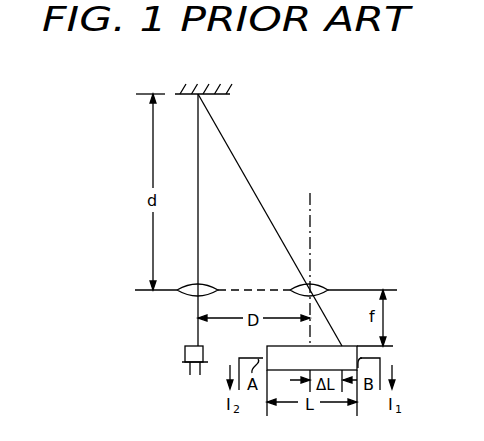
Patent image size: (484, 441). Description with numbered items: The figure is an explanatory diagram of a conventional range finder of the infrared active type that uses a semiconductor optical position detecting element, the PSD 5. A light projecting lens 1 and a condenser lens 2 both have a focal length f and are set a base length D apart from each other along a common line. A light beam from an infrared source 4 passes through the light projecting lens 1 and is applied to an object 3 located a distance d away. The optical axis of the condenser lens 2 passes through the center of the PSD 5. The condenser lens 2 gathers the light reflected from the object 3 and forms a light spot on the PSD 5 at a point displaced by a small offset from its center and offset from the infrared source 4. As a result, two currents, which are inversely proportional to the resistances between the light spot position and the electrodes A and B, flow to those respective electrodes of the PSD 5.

The light projecting lens 1 is at (210, 285).
The condenser lens 2 is at (322, 285).
The object 3 is at (230, 94).
The infrared source 4 is at (185, 347).
The PSD 5 is at (266, 347).